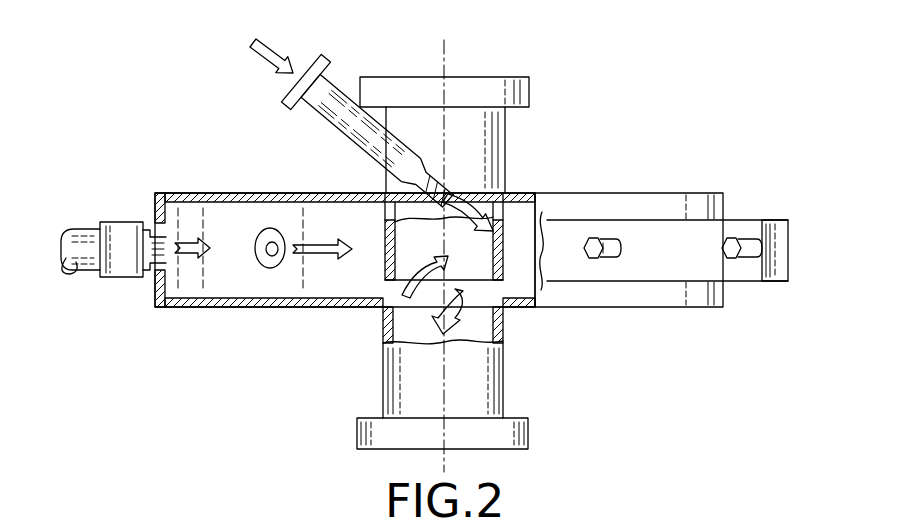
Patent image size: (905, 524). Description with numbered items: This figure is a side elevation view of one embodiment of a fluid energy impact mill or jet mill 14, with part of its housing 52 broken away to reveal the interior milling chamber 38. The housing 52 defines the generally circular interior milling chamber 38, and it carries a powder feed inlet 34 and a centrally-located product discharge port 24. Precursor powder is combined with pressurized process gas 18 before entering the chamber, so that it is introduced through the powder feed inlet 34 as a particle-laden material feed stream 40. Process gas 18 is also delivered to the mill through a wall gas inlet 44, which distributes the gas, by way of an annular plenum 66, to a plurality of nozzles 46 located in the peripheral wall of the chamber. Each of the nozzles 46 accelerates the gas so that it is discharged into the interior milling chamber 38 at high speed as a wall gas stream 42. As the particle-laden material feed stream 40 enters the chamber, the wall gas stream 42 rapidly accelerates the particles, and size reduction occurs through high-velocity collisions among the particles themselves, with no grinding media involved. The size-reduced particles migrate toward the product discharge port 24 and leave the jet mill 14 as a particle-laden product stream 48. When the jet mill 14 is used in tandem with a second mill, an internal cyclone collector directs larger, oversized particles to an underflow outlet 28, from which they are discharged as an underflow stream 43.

The jet mill 14 is at (177, 81).
The process gas 18 is at (50, 248).
The product discharge port 24 is at (529, 88).
The underflow outlet 28 is at (503, 380).
The powder feed inlet 34 is at (314, 114).
The interior milling chamber 38 is at (228, 290).
The particle-laden material feed stream 40 is at (270, 40).
The wall gas stream 42 is at (205, 250).
The underflow stream 43 is at (458, 306).
The wall gas inlet 44 is at (118, 277).
The nozzles 46 is at (268, 268).
The particle-laden product stream 48 is at (410, 290).
The housing 52 is at (684, 186).
The annular plenum 66 is at (766, 218).